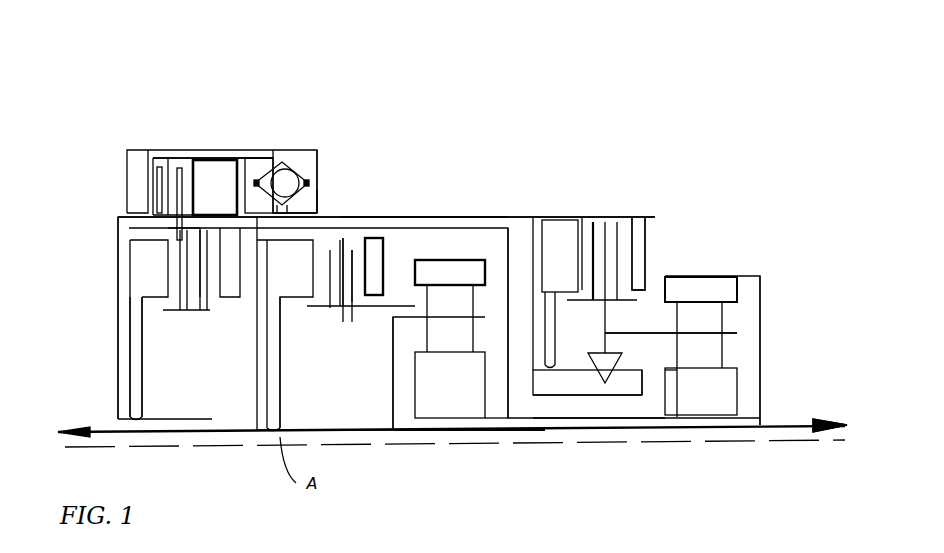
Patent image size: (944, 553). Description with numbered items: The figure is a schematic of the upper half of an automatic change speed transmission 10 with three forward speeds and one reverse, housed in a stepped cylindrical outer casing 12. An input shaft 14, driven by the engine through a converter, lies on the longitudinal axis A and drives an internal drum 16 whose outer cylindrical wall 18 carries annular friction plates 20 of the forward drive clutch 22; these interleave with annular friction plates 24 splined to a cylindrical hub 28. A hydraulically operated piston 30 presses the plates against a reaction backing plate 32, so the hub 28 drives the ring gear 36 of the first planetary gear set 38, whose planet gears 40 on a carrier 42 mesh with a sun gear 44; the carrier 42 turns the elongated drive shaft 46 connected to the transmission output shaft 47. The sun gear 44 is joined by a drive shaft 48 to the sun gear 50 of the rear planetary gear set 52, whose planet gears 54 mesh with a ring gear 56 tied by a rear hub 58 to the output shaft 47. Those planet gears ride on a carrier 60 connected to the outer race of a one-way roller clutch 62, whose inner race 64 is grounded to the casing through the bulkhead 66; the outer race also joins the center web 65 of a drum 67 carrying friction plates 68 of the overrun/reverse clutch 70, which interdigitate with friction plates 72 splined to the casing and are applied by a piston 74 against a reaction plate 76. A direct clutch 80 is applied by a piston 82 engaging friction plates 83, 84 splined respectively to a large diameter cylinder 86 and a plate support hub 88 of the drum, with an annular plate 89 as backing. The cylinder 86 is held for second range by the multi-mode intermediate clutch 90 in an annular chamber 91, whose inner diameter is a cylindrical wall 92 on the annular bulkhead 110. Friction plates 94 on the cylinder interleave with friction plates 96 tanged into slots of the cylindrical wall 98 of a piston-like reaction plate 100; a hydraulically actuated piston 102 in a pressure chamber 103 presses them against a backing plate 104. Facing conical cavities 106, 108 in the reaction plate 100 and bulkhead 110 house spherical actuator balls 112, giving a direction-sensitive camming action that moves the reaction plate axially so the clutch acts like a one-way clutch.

The automatic change speed transmission 10 is at (576, 86).
The outer casing 12 is at (502, 214).
The input shaft 14 is at (177, 433).
The internal drum 16 is at (263, 393).
The outer cylindrical wall 18 is at (380, 214).
The annular friction plates 20 is at (294, 284).
The forward drive clutch 22 is at (422, 214).
The annular friction plates 24 is at (353, 306).
The cylindrical hub 28 is at (393, 300).
The hydraulically operated piston 30 is at (274, 389).
The reaction backing plate 32 is at (358, 272).
The ring gear 36 is at (523, 420).
The first planetary gear set 38 is at (409, 448).
The planet gears 40 is at (438, 342).
The carrier 42 is at (393, 407).
The sun gear 44 is at (458, 407).
The elongated drive shaft 46 is at (601, 420).
The transmission output shaft 47 is at (783, 430).
The drive shaft 48 is at (542, 430).
The sun gear 50 is at (715, 397).
The rear planetary gear set 52 is at (777, 270).
The planet gears 54 is at (710, 318).
The ring gear 56 is at (715, 288).
The rear hub 58 is at (762, 366).
The carrier 60 is at (714, 337).
The one-way roller clutch 62 is at (639, 407).
The inner race 64 is at (577, 388).
The center web 65 is at (606, 316).
The bulkhead 66 is at (522, 214).
The drum 67 is at (672, 259).
The friction plates 68 is at (643, 253).
The overrun/reverse clutch 70 is at (615, 210).
The friction plates 72 is at (593, 218).
The hydraulically operated piston 74 is at (565, 222).
The reaction plate 76 is at (650, 257).
The direct clutch 80 is at (184, 258).
The piston 82 is at (133, 257).
The friction plates 83 is at (133, 276).
The friction plates 84 is at (187, 256).
The large diameter cylinder 86 is at (474, 214).
The plate support hub 88 is at (240, 312).
The annular plate 89 is at (266, 312).
The multi-mode intermediate clutch 90 is at (125, 163).
The annular chamber 91 is at (222, 155).
The cylindrical wall 92 is at (320, 215).
The friction plates 94 is at (153, 180).
The friction plates 96 is at (152, 162).
The cylindrical wall 98 is at (208, 157).
The reaction plate 100 is at (258, 154).
The hydraulically actuated piston 102 is at (204, 180).
The pressure chamber 103 is at (206, 157).
The backing plate 104 is at (131, 152).
The conical cavities 106 is at (285, 172).
The conical cavities 108 is at (318, 160).
The annular bulkhead 110 is at (318, 195).
The spherical actuator balls 112 is at (307, 170).